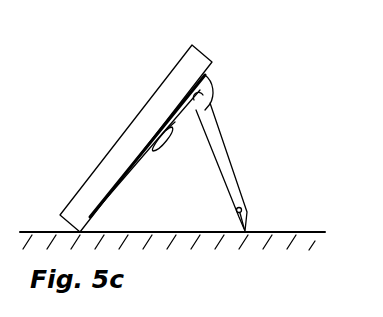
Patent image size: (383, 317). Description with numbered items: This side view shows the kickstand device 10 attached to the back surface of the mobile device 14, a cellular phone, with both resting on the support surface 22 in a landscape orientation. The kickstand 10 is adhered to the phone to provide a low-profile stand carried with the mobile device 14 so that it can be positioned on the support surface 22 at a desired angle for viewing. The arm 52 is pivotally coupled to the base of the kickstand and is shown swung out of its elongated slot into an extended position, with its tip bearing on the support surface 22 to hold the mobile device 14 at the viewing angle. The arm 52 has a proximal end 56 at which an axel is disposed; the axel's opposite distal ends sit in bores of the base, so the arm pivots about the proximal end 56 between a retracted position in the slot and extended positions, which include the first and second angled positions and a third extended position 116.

The kickstand device 10 is at (224, 101).
The mobile device 14 is at (122, 157).
The support surface 22 is at (155, 233).
The arm 52 is at (228, 171).
The proximal end 56 is at (241, 196).
The third extended position 116 is at (201, 112).